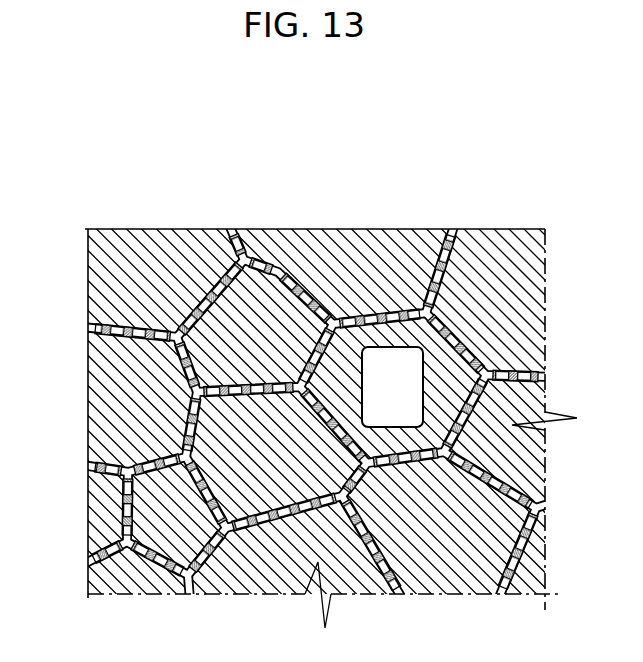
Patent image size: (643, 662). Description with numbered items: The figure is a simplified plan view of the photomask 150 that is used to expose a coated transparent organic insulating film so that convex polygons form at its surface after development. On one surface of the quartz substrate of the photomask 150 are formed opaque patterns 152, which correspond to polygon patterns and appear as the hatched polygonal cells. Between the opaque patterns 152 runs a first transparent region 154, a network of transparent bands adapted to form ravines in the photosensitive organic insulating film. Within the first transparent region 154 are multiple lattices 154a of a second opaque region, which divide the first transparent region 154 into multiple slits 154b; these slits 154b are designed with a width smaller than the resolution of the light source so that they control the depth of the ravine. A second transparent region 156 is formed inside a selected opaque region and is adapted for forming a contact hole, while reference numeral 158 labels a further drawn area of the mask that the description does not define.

The photomask 150 is at (321, 361).
The opaque patterns 152 is at (401, 253).
The first transparent region 154 is at (316, 347).
The lattices of second opaque region 154a is at (246, 231).
The slits 154b is at (226, 236).
The second transparent region 156 is at (405, 381).
The hatched layer 158 is at (338, 250).